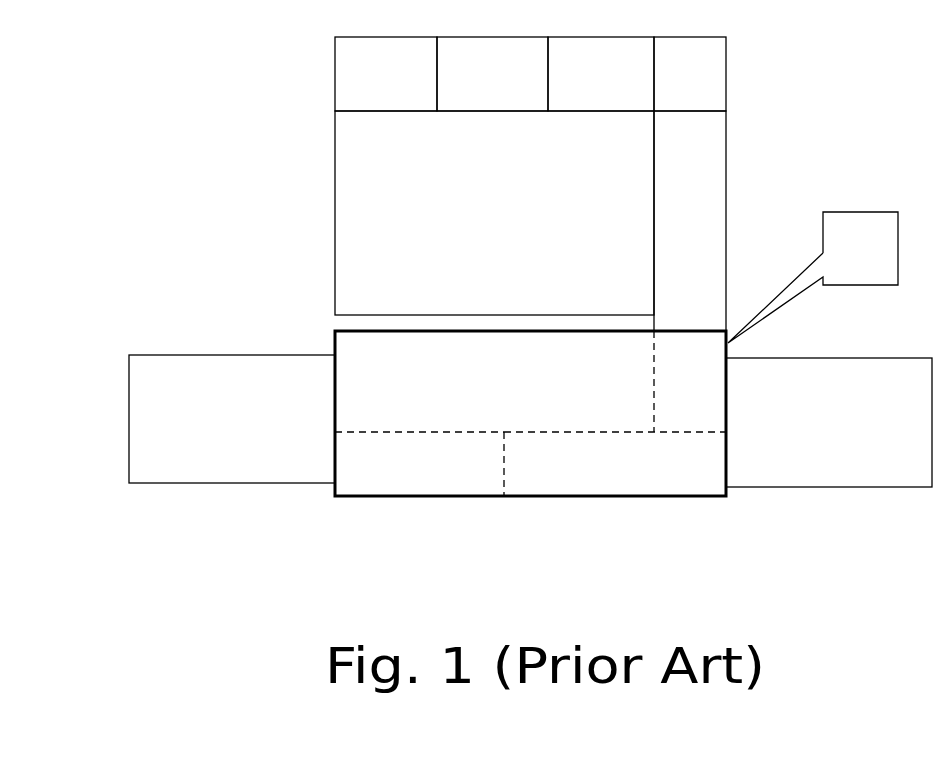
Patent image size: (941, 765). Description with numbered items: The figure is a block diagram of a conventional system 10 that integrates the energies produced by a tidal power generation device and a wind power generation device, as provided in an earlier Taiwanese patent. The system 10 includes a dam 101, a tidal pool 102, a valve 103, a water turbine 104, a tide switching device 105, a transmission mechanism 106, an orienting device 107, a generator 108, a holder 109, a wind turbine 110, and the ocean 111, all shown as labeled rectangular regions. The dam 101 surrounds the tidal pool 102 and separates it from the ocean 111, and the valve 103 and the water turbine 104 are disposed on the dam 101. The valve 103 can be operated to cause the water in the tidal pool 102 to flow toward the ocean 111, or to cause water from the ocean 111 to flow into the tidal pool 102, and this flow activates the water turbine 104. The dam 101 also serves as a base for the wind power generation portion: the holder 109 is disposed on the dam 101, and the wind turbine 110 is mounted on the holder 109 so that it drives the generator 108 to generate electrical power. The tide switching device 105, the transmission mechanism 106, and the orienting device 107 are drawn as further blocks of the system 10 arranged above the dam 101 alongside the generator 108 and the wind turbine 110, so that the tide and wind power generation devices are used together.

The system 10 is at (558, 555).
The dam 101 is at (813, 277).
The tidal pool 102 is at (829, 422).
The valve 103 is at (419, 464).
The water turbine 104 is at (615, 456).
The tide switching device 105 is at (690, 74).
The transmission mechanism 106 is at (690, 271).
The orienting device 107 is at (492, 74).
The generator 108 is at (601, 74).
The holder 109 is at (494, 213).
The wind turbine 110 is at (386, 74).
The ocean 111 is at (232, 419).